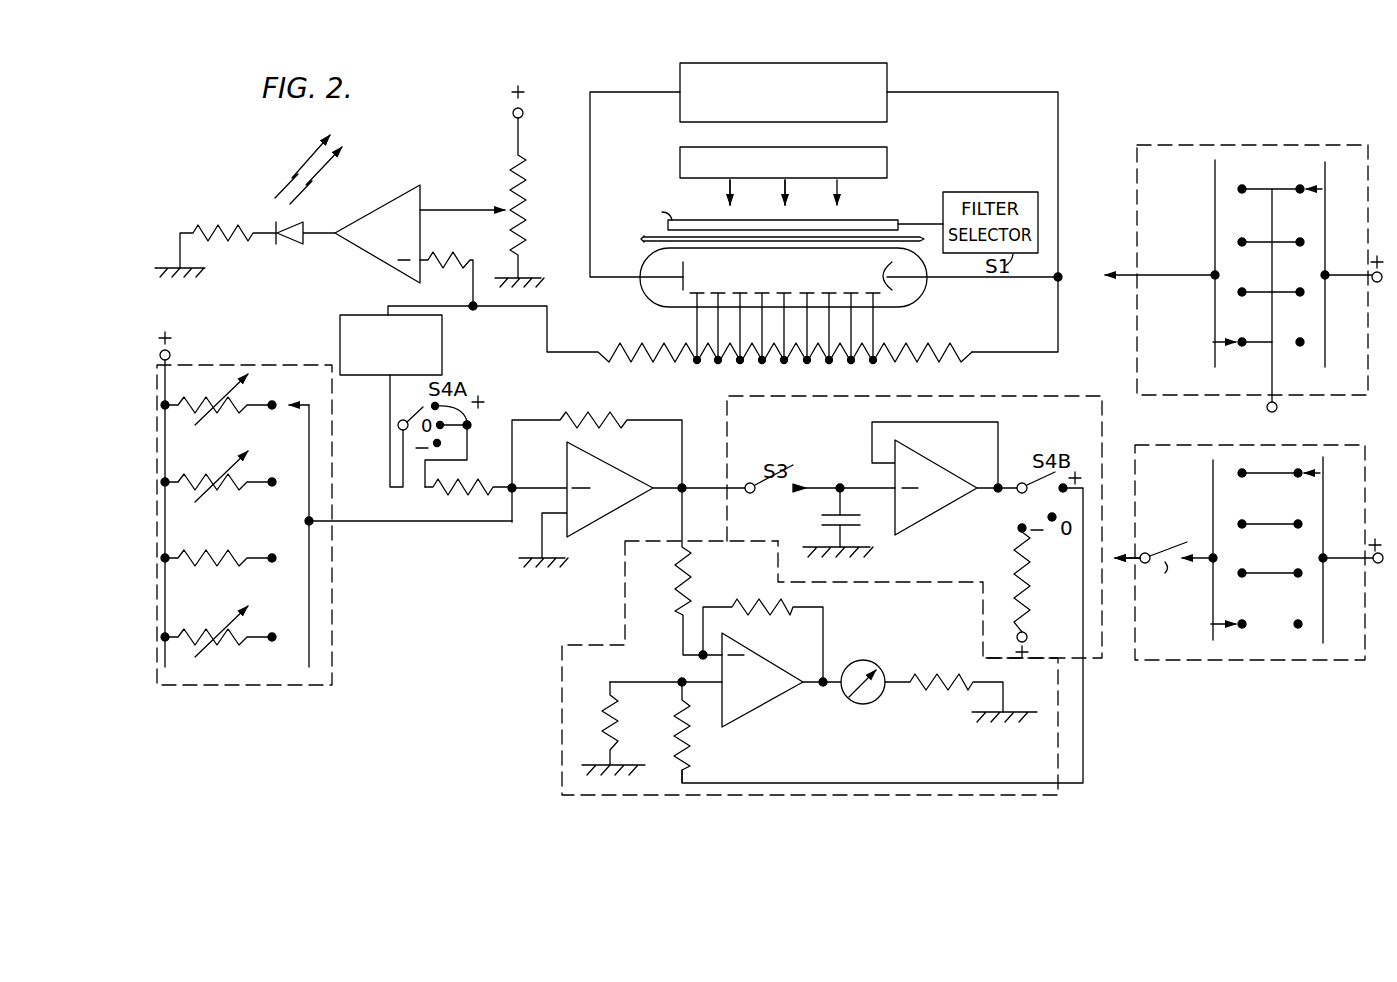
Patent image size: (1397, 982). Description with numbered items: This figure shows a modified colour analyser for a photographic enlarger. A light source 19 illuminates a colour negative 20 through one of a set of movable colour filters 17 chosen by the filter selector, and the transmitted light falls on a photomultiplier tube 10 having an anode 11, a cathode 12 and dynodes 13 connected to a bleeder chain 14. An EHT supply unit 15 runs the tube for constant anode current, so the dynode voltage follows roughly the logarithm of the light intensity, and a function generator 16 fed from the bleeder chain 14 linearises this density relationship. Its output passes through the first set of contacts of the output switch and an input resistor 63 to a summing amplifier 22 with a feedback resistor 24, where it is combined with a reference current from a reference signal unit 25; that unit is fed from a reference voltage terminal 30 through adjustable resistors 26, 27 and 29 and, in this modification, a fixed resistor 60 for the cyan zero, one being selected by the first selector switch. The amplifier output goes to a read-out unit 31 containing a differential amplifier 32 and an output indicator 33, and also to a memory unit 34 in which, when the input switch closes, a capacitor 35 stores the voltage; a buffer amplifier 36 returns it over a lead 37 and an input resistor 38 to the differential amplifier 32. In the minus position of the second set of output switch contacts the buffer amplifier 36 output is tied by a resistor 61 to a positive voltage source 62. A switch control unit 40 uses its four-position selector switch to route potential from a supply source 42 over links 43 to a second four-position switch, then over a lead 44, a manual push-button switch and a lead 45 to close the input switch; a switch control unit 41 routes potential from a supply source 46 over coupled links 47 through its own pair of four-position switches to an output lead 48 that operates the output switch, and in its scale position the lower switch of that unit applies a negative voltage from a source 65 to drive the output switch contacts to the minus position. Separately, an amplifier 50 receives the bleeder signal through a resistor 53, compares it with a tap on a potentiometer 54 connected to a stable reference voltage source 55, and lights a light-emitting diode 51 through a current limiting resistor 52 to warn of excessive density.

The photomultiplier tube 10 is at (927, 295).
The anode 11 is at (681, 284).
The cathode 12 is at (889, 278).
The dynodes 13 is at (807, 290).
The bleeder chain 14 is at (807, 365).
The EHT supply unit 15 is at (888, 82).
The function generator 16 is at (442, 357).
The movable colour filters 17 is at (870, 220).
The light source 19 is at (888, 158).
The colour negative 20 is at (643, 240).
The summing amplifier 22 is at (595, 461).
The feedback resistor 24 is at (578, 420).
The reference signal unit 25 is at (292, 686).
The adjustable resistor 26 is at (208, 407).
The adjustable resistor 27 is at (208, 484).
The adjustable resistor 29 is at (210, 636).
The reference voltage source terminal 30 is at (169, 352).
The read-out unit 31 is at (562, 718).
The differential amplifier 32 is at (752, 665).
The output indicator 33 is at (872, 663).
The memory unit 34 is at (1102, 416).
The capacitor 35 is at (822, 515).
The buffer amplifier 36 is at (922, 463).
The lead 37 is at (1083, 754).
The input resistor 38 is at (688, 752).
The switch control unit 40 is at (1300, 662).
The switch control unit 41 is at (1290, 395).
The supply source 42 is at (1373, 563).
The links 43 is at (1266, 473).
The lead 44 is at (1219, 545).
The lead 45 is at (1130, 565).
The positive potential supply source 46 is at (1372, 283).
The links 47 is at (1260, 188).
The output lead 48 is at (1153, 275).
The amplifier 50 is at (362, 218).
The light-emitting diode 51 is at (288, 245).
The current limiting resistor 52 is at (236, 234).
The resistor 53 is at (441, 263).
The potentiometer 54 is at (512, 163).
The stable reference voltage source 55 is at (513, 112).
The fixed resistor 60 is at (212, 556).
The resistor 61 is at (1016, 556).
The positive voltage source 62 is at (1027, 633).
The input resistor 63 is at (460, 495).
The negative voltage source 65 is at (1267, 410).